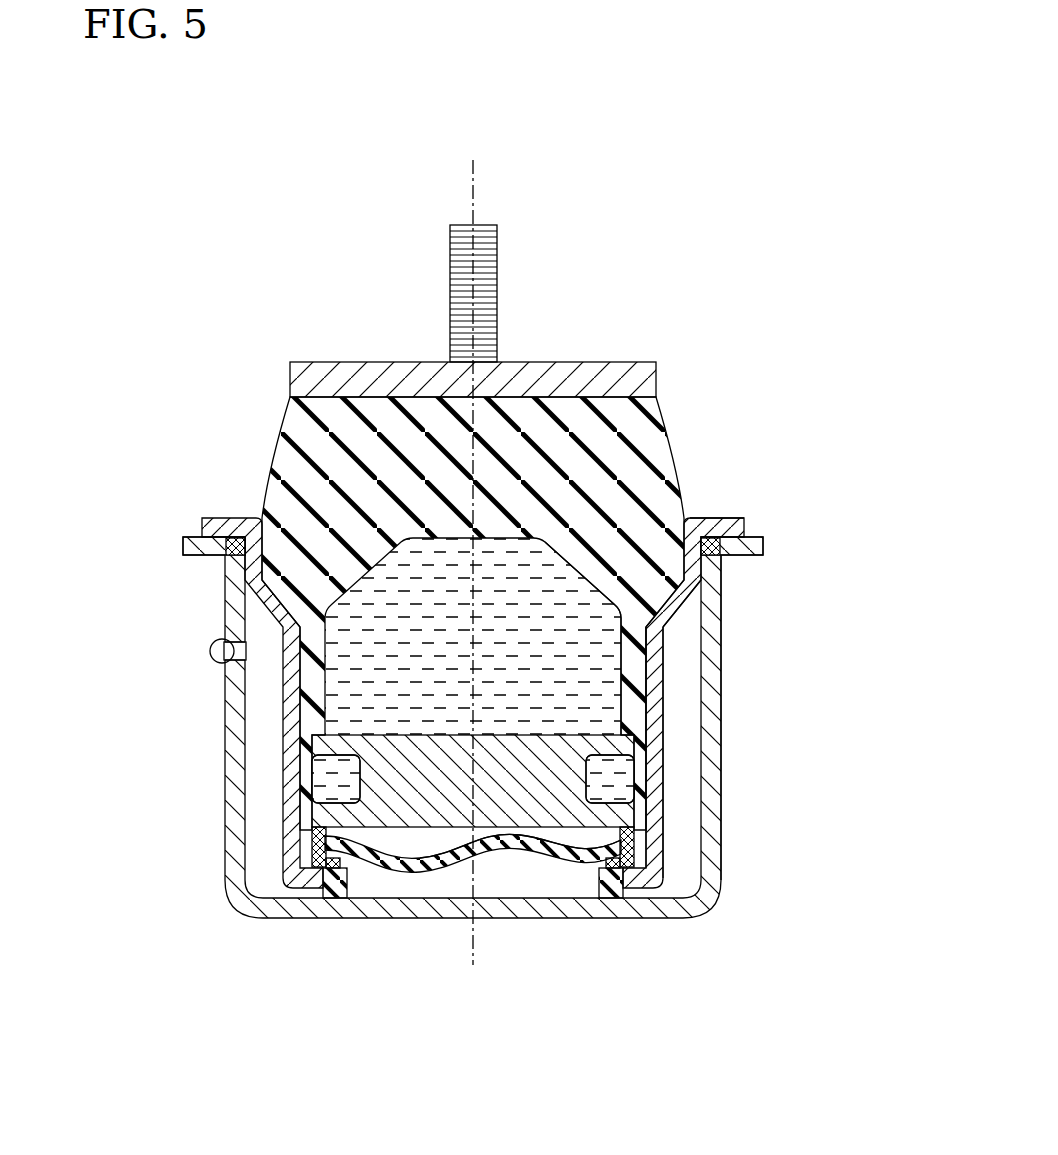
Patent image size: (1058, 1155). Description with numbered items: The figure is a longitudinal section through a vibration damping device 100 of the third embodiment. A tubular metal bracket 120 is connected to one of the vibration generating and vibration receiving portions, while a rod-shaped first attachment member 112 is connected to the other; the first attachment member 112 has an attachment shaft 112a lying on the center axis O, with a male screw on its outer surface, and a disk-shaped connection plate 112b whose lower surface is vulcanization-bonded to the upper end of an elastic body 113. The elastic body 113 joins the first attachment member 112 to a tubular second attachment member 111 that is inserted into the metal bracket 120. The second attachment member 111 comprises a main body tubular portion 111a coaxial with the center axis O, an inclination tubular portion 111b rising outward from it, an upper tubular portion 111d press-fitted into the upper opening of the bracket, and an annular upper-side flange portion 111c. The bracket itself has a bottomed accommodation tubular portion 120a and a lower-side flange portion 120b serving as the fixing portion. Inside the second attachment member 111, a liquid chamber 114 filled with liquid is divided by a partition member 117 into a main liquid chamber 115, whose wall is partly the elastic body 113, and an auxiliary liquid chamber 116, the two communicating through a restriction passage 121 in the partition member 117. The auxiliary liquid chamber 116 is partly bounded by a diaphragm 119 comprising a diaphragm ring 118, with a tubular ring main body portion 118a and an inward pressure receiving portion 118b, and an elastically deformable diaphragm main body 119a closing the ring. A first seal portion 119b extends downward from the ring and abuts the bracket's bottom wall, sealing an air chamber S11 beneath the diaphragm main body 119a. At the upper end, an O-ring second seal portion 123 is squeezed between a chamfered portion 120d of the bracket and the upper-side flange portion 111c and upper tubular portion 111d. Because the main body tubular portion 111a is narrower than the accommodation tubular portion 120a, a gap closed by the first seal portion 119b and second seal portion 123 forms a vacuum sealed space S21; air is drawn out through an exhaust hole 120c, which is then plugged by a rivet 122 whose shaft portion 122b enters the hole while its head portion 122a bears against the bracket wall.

The vibration damping device 100 is at (237, 213).
The center axis O is at (468, 186).
The second attachment member 111 is at (680, 757).
The main body tubular portion 111a is at (660, 696).
The inclination tubular portion 111b is at (680, 605).
The upper-side flange portion 111c is at (728, 523).
The upper tubular portion 111d is at (698, 563).
The first attachment member 112 is at (505, 236).
The attachment shaft 112a is at (456, 282).
The connection plate 112b is at (595, 372).
The elastic body 113 is at (690, 436).
The liquid chamber 114 is at (580, 577).
The main liquid chamber 115 is at (460, 646).
The auxiliary liquid chamber 116 is at (388, 845).
The partition member 117 is at (372, 720).
The diaphragm ring 118 is at (745, 978).
The ring main body portion 118a is at (642, 850).
The pressure receiving portion 118b is at (620, 862).
The diaphragm 119 is at (700, 1022).
The diaphragm main body 119a is at (514, 880).
The first seal portion 119b is at (590, 855).
The metal bracket 120 is at (732, 908).
The accommodation tubular portion 120a is at (718, 810).
The lower-side flange portion 120b is at (745, 550).
The exhaust hole 120c is at (216, 645).
The chamfered portion 120d is at (222, 540).
The restriction passage 121 is at (323, 783).
The rivet 122 is at (205, 648).
The head portion 122a is at (228, 651).
The shaft portion 122b is at (235, 665).
The second seal portion 123 is at (238, 542).
The air chamber S11 is at (474, 894).
The sealed space S21 is at (255, 757).